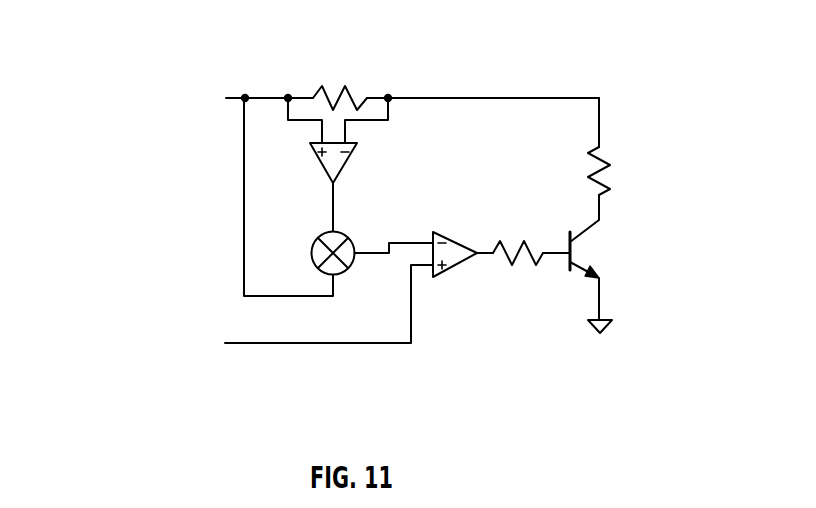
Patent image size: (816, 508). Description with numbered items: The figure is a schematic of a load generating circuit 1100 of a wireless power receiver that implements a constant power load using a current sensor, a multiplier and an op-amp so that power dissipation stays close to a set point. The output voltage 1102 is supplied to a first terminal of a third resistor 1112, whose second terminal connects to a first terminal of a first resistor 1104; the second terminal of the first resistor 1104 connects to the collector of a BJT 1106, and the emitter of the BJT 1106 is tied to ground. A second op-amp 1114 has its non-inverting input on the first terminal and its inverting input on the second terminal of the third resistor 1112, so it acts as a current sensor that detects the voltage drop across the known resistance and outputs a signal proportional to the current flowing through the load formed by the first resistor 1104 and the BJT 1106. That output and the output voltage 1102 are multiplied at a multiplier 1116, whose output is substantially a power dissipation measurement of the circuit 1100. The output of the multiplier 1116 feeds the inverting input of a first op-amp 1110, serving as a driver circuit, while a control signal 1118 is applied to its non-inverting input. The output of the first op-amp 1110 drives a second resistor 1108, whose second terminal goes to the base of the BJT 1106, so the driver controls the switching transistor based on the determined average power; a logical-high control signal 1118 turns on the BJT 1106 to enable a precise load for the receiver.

The load generating circuit 1100 is at (151, 50).
The voltage Vout 1102 is at (190, 73).
The resistor R1 1104 is at (627, 155).
The BJT 1106 is at (610, 237).
The resistor R2 1108 is at (512, 210).
The op-amp U1 1110 is at (449, 205).
The resistor R3 1112 is at (340, 62).
The op-amp U2 1114 is at (377, 162).
The multiplier 1116 is at (337, 228).
The control signal 1118 is at (188, 333).